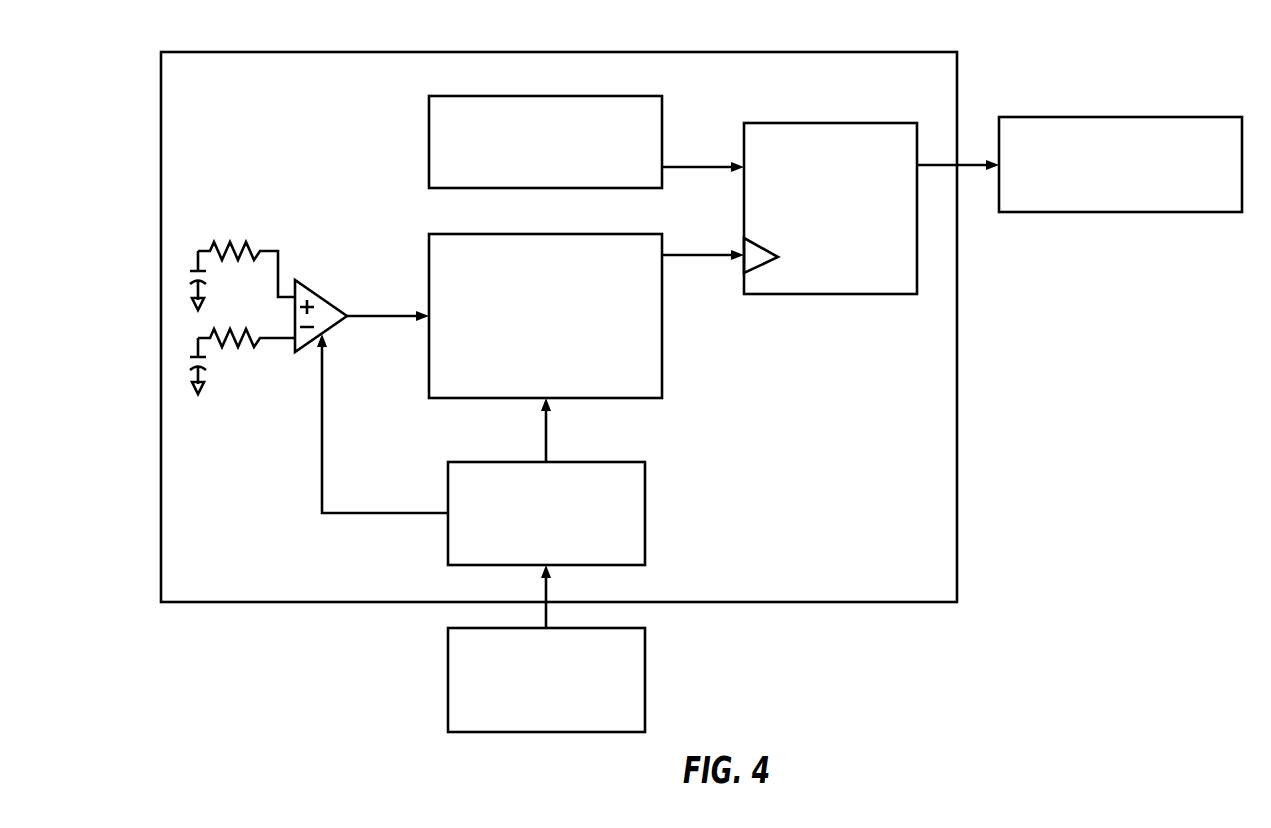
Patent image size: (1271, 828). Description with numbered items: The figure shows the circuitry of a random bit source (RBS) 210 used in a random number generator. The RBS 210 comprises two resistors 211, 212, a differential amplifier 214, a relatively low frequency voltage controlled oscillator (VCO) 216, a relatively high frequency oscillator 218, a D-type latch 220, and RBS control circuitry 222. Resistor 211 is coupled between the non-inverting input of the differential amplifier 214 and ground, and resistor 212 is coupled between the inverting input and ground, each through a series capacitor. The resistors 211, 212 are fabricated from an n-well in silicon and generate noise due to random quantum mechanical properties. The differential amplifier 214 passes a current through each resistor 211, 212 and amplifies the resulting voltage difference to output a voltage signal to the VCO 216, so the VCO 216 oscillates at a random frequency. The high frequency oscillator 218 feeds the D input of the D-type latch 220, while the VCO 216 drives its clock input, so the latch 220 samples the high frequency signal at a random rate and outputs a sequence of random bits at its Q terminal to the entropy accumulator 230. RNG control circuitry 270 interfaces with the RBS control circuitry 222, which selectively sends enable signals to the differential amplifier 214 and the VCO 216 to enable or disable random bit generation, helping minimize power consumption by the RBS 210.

The random bit source 210 is at (873, 603).
The resistor 211 is at (222, 242).
The resistor 212 is at (245, 345).
The differential amplifier 214 is at (303, 287).
The voltage controlled oscillator 216 is at (665, 367).
The high frequency oscillator 218 is at (665, 96).
The D-type latch 220 is at (858, 122).
The RBS control circuitry 222 is at (647, 512).
The entropy accumulator 230 is at (1147, 117).
The RNG control circuitry 270 is at (647, 675).